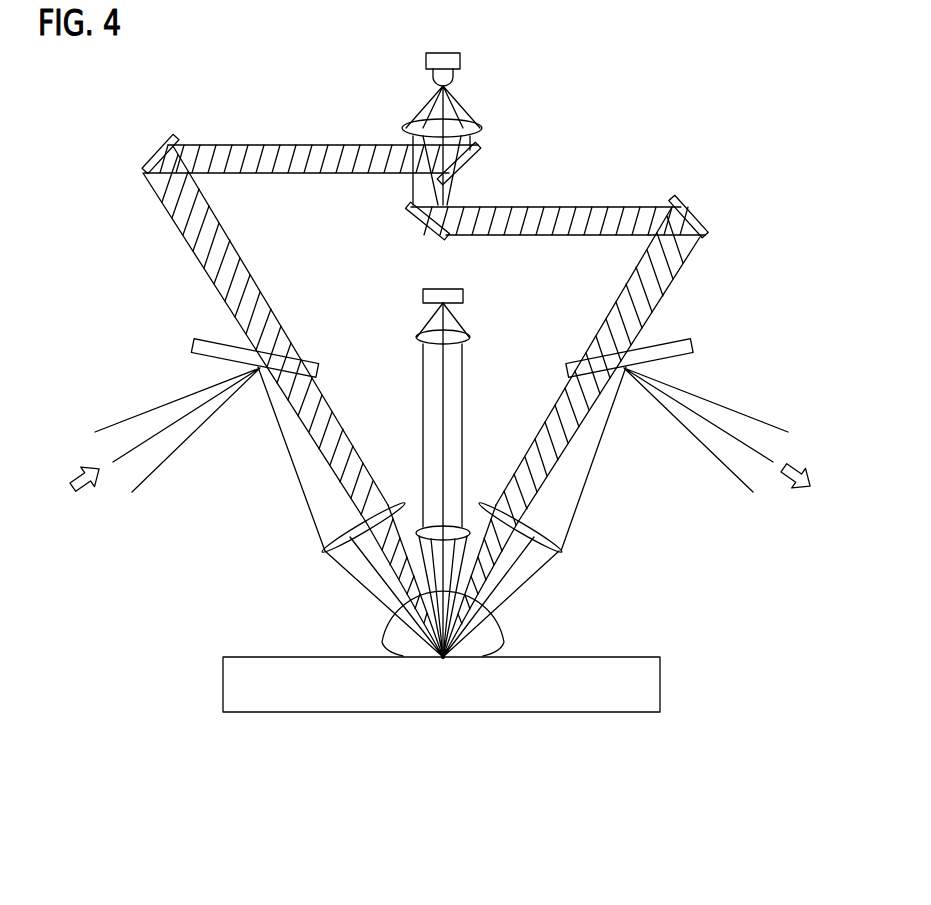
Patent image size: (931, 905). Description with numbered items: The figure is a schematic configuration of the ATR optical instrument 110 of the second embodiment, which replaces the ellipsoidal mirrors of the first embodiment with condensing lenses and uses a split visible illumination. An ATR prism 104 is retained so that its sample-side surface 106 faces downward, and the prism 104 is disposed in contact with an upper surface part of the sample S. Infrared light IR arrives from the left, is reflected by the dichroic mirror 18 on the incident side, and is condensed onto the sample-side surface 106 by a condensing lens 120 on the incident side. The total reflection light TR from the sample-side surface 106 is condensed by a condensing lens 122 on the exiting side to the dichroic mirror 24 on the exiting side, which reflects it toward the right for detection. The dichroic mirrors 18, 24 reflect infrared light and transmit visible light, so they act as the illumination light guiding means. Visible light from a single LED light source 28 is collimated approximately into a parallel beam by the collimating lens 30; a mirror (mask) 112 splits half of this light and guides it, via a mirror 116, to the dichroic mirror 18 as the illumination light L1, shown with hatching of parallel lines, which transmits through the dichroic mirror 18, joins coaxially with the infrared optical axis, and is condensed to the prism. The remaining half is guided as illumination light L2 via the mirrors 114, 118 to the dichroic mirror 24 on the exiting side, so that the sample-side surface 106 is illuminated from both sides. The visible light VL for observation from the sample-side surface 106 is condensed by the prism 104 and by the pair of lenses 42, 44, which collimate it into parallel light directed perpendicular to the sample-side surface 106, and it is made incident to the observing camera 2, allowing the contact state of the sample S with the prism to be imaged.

The observing camera 2 is at (464, 296).
The dichroic mirror 18 is at (212, 360).
The dichroic mirror 24 is at (672, 357).
The LED light source 28 is at (462, 62).
The collimating lens 30 is at (486, 128).
The lens 42 is at (450, 527).
The lens 44 is at (471, 337).
The ATR prism 104 is at (497, 647).
The sample-side surface 106 is at (444, 659).
The ATR optical instrument 110 is at (727, 109).
The mirror (mask) 112 is at (483, 172).
The mirror 114 is at (404, 214).
The mirror 116 is at (148, 148).
The mirror 118 is at (706, 212).
The condensing lens 120 is at (353, 543).
The condensing lens 122 is at (531, 543).
The illumination light L1 is at (272, 305).
The illumination light L2 is at (613, 307).
The visible light VL is at (464, 385).
The infrared light IR is at (150, 443).
The total reflection light TR is at (737, 444).
The sample S is at (578, 694).